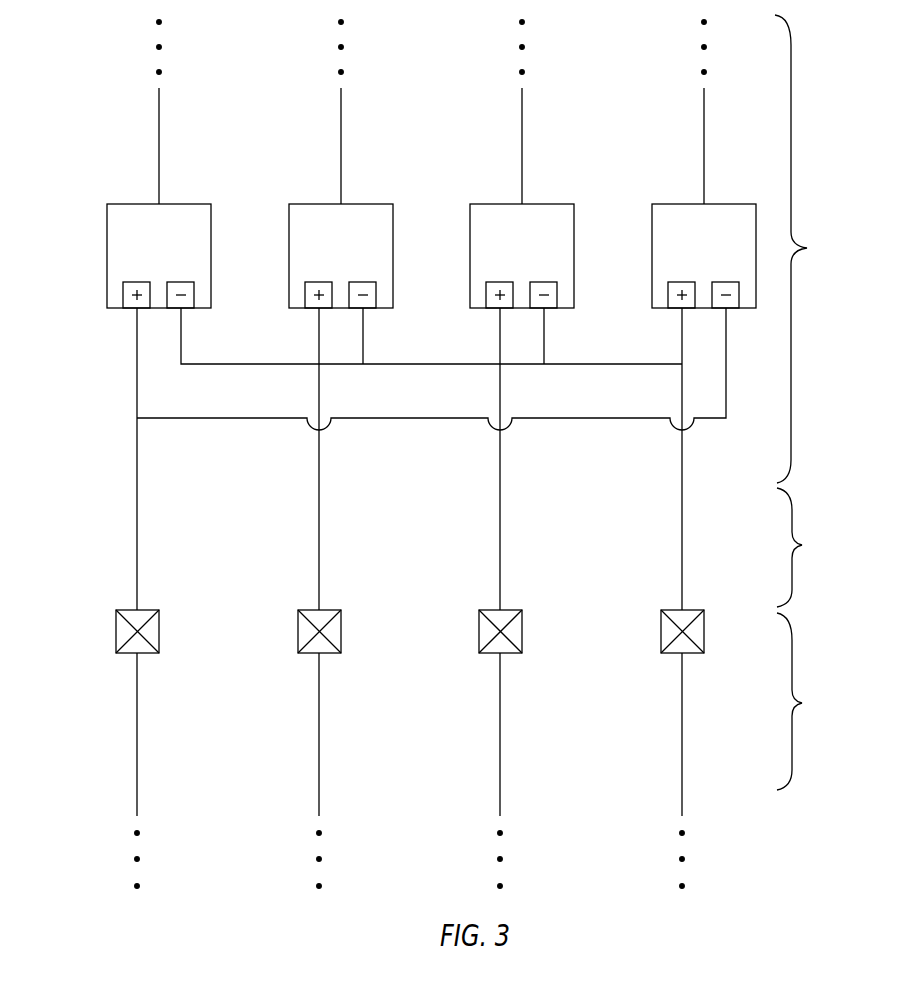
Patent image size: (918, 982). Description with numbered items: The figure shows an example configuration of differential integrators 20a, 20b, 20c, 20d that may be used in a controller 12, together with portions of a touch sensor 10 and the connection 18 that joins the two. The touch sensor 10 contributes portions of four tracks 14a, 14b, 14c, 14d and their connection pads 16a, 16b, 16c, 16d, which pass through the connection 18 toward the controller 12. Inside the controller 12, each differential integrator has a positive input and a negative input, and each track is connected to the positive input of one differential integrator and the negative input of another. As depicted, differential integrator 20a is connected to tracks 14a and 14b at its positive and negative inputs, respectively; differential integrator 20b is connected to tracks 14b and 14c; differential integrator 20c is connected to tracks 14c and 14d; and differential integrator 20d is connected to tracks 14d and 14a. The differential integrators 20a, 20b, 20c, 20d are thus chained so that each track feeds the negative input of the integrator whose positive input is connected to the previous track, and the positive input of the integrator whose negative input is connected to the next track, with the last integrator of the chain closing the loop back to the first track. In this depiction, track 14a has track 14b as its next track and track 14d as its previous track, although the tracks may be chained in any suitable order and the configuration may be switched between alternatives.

The touch sensor 10 is at (810, 701).
The controller 12 is at (809, 249).
The track 14a is at (137, 746).
The track 14b is at (319, 746).
The track 14c is at (500, 746).
The track 14d is at (682, 746).
The connection pad 16a is at (116, 633).
The connection pad 16b is at (298, 633).
The connection pad 16c is at (479, 633).
The connection pad 16d is at (661, 633).
The connection 18 is at (809, 547).
The differential integrator 20a is at (107, 250).
The differential integrator 20b is at (289, 250).
The differential integrator 20c is at (470, 250).
The differential integrator 20d is at (652, 250).